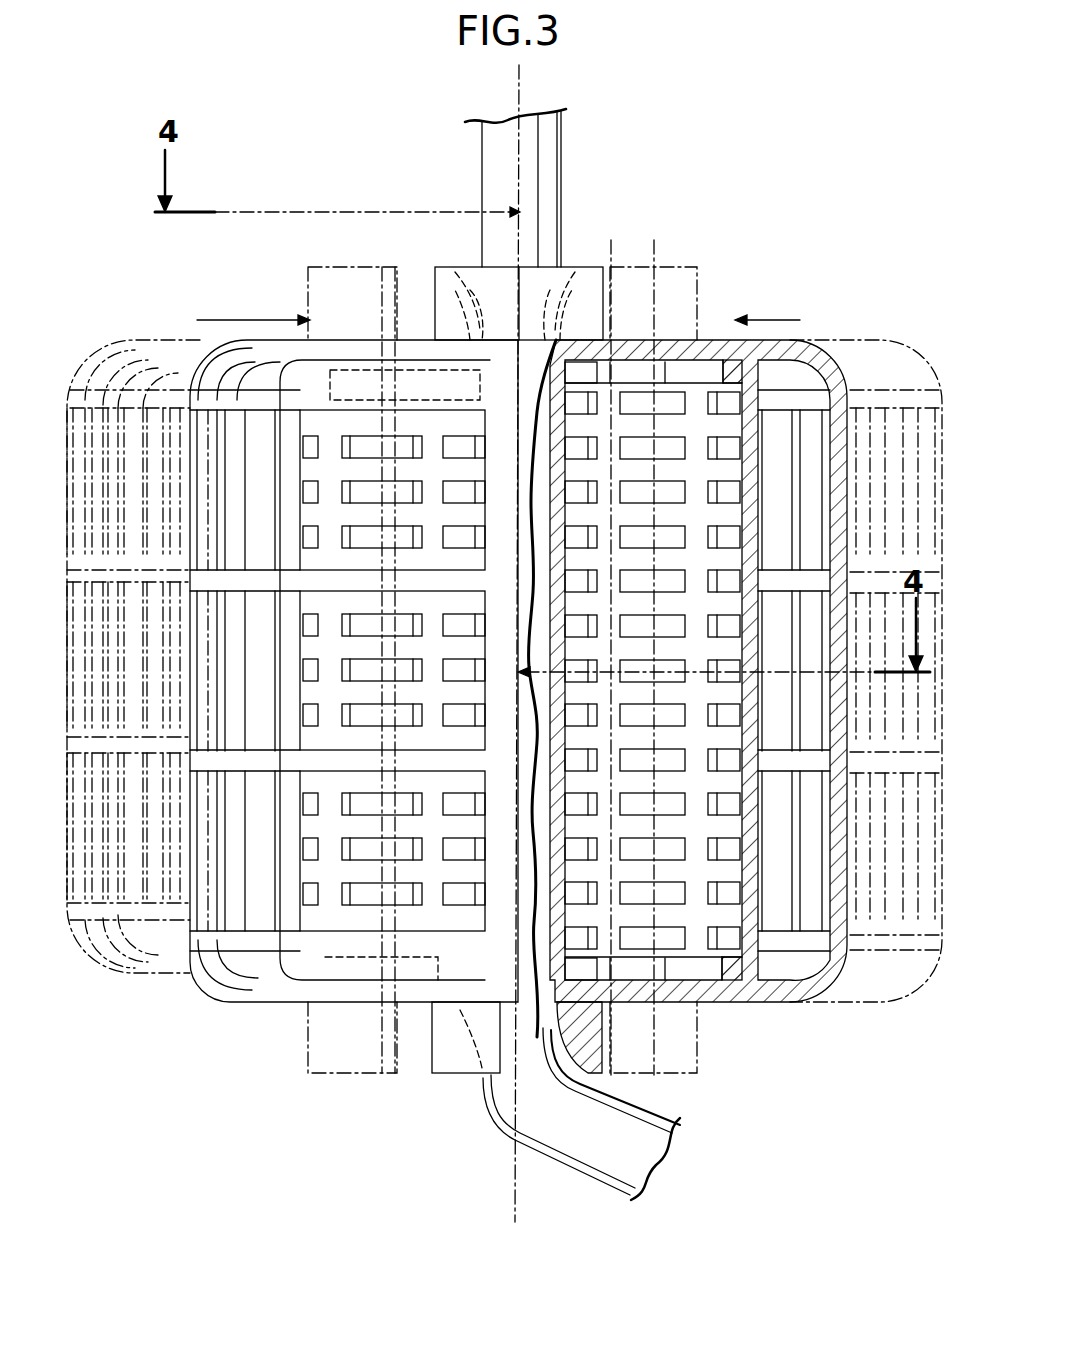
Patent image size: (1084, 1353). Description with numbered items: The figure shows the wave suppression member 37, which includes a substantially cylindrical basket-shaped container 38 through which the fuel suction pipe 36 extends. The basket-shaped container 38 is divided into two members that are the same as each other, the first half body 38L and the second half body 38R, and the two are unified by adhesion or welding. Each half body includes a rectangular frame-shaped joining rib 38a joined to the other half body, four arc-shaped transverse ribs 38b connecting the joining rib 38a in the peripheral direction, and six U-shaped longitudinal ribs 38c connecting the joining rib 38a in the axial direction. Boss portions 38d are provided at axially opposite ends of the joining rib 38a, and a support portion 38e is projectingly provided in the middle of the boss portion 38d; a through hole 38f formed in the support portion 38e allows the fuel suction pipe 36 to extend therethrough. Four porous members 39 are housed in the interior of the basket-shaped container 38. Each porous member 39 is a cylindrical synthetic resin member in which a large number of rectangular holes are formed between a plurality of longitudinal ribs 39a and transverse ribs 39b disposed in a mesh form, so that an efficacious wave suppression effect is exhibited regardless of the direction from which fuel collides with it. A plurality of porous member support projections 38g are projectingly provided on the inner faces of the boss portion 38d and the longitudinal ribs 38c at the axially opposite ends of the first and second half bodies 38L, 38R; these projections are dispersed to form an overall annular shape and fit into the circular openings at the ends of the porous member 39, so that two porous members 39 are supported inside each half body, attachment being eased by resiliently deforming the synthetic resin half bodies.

The fuel suction pipe 36 is at (552, 169).
The wave suppression member 37 is at (772, 222).
The basket-shaped container 38 is at (710, 298).
The first half body 38L is at (356, 332).
The second half body 38R is at (725, 330).
The joining rib 38a is at (500, 367).
The transverse ribs 38b is at (772, 402).
The longitudinal ribs 38c is at (852, 470).
The boss portions 38d is at (625, 378).
The support portion 38e is at (470, 300).
The through hole 38f is at (470, 300).
The porous member support projections 38g is at (700, 372).
The porous member 39 is at (330, 781).
The longitudinal ribs 39a is at (740, 625).
The transverse ribs 39b is at (374, 606).